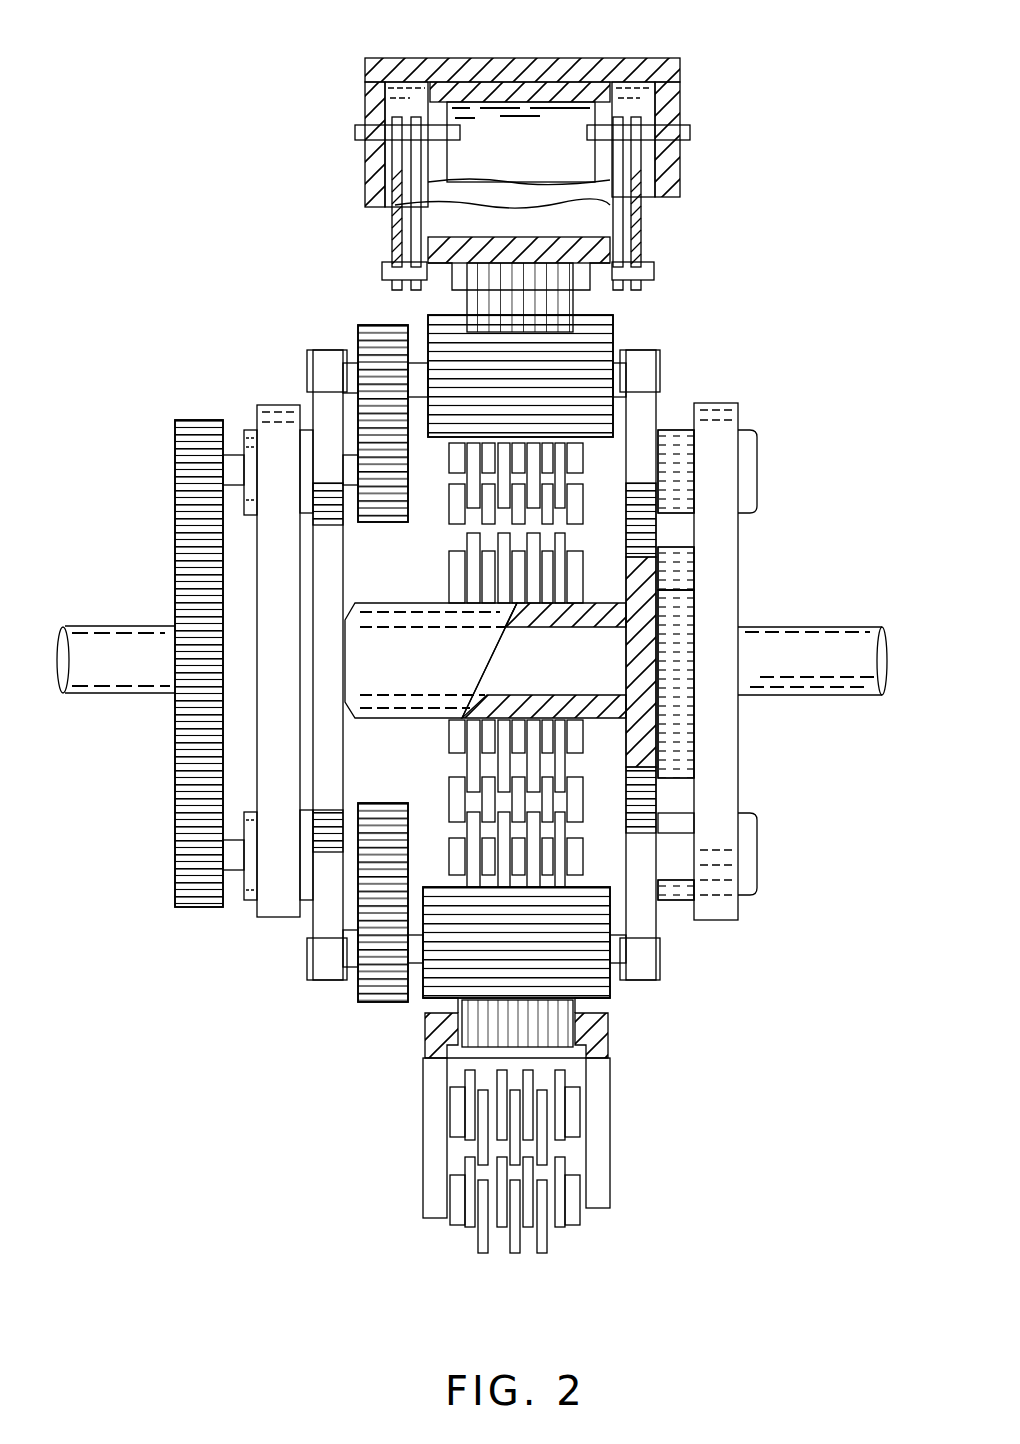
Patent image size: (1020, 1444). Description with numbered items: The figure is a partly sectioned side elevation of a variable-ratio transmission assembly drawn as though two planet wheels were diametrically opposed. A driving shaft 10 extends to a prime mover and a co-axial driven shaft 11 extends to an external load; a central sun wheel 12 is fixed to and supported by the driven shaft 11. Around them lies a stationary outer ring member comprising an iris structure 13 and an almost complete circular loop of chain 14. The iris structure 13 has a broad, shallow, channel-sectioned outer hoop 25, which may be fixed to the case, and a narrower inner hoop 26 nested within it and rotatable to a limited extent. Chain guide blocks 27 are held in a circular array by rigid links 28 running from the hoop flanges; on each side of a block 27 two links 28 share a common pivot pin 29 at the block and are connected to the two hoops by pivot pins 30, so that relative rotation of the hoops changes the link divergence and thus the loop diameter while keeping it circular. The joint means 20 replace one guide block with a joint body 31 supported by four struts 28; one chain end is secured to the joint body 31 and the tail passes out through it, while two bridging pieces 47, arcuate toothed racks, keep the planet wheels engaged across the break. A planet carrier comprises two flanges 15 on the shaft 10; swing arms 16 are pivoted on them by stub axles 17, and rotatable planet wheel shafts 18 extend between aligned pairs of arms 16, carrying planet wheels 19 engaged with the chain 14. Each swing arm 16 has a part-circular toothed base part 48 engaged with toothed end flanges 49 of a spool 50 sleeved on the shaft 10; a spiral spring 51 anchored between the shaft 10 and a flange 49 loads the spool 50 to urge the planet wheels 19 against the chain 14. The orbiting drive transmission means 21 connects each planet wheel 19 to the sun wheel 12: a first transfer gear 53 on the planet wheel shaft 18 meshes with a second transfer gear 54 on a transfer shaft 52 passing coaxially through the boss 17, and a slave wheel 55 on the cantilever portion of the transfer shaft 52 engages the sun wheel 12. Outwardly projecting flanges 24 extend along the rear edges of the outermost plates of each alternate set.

The driving shaft 10 is at (790, 650).
The driven shaft 11 is at (110, 660).
The sun wheel 12 is at (197, 758).
The iris structure 13 is at (300, 125).
The chain 14 is at (493, 300).
The flanges 15 is at (278, 450).
The swing arms 16 is at (330, 380).
The stub axles 17 is at (745, 460).
The planet wheel shafts 18 is at (620, 380).
The planet wheels 19 is at (575, 360).
The joint means 20 is at (398, 1092).
The orbiting drive transmission means 21 is at (228, 922).
The flanges 24 is at (578, 800).
The outer hoop 25 is at (680, 70).
The inner hoop 26 is at (515, 90).
The chain guide blocks 27 is at (600, 245).
The links 28 is at (630, 190).
The pivot pin 29 is at (385, 270).
The pivot pins 30 is at (447, 125).
The joint body 31 is at (575, 1150).
The bridging pieces 47 is at (430, 1040).
The toothed base part 48 is at (665, 535).
The toothed end flanges 49 is at (640, 580).
The spool 50 is at (400, 667).
The spiral spring 51 is at (665, 720).
The transfer shafts 52 is at (250, 470).
The first transfer gear 53 is at (385, 345).
The second transfer gear 54 is at (360, 545).
The slave wheel 55 is at (190, 487).